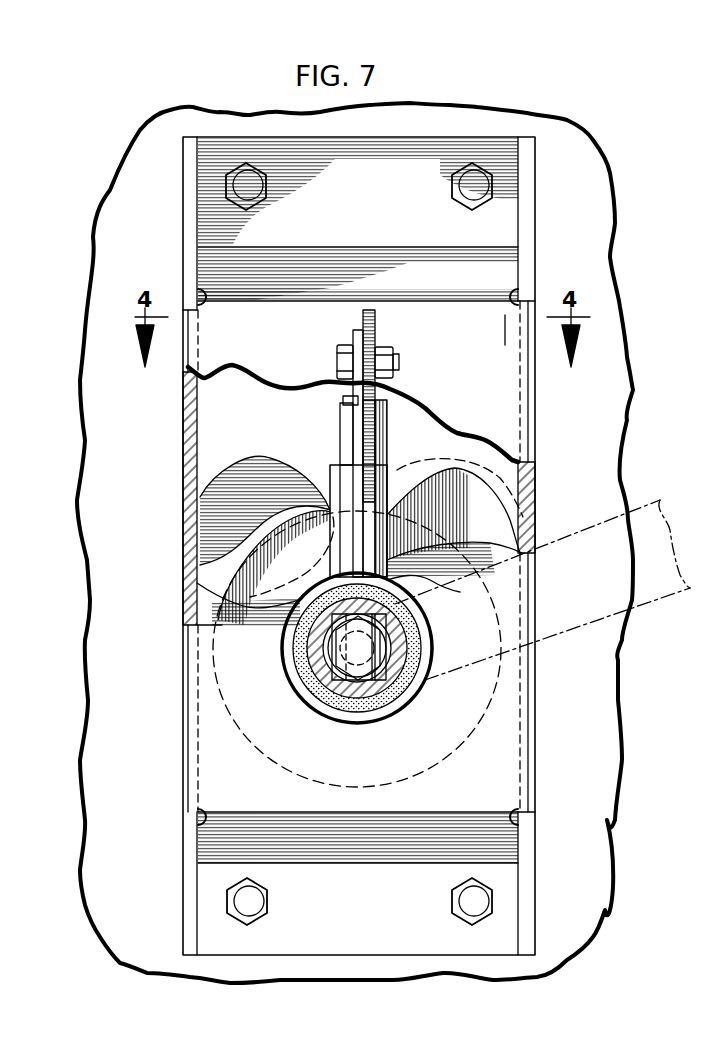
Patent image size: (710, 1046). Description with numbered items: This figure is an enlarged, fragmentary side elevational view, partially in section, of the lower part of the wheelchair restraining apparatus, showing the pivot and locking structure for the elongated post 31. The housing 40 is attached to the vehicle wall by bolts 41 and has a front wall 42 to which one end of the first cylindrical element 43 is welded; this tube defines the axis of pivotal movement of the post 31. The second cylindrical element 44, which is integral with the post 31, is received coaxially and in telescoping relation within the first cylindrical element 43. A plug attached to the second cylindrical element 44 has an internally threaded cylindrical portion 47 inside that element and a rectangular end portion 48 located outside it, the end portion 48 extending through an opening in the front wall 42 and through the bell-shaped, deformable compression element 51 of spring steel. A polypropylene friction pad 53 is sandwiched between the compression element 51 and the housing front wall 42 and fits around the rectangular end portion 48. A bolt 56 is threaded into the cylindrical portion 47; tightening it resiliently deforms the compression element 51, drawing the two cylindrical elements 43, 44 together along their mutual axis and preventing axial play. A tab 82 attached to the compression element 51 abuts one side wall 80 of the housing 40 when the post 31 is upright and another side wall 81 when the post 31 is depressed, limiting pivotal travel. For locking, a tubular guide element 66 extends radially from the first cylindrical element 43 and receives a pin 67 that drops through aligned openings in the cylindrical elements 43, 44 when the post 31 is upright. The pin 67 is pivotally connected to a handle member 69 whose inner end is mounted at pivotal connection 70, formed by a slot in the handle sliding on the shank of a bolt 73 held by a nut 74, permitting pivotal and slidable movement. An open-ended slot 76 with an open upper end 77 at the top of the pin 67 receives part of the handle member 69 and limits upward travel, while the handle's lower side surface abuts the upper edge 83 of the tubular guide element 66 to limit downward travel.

The elongated post 31 is at (650, 500).
The housing 40 is at (183, 501).
The bolts 41 is at (450, 186).
The front wall 42 is at (517, 334).
The first cylindrical element 43 is at (398, 702).
The second cylindrical element 44 is at (433, 630).
The threaded cylindrical portion 47 is at (312, 672).
The end portion 48 is at (415, 606).
The compression element 51 is at (200, 587).
The friction pad 53 is at (297, 648).
The bolt 56 is at (427, 648).
The tubular guide element 66 is at (388, 460).
The pin 67 is at (378, 438).
The handle member 69 is at (358, 424).
The pivotal connection 70 is at (398, 362).
The bolt 73 is at (337, 366).
The nut 74 is at (374, 345).
The open-ended slot 76 is at (352, 397).
The open upper end 77 is at (345, 418).
The side wall 80 is at (210, 396).
The side wall 81 is at (512, 494).
The tab 82 is at (222, 412).
The upper edge 83 is at (332, 468).